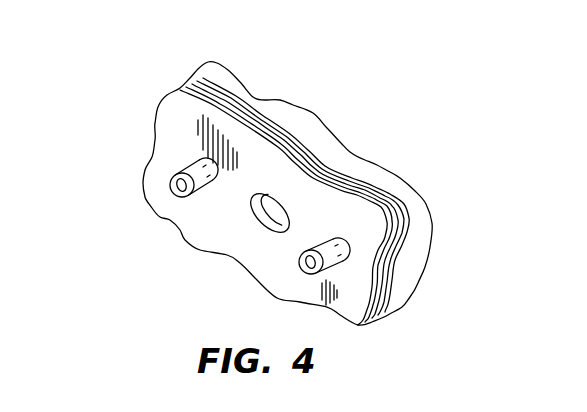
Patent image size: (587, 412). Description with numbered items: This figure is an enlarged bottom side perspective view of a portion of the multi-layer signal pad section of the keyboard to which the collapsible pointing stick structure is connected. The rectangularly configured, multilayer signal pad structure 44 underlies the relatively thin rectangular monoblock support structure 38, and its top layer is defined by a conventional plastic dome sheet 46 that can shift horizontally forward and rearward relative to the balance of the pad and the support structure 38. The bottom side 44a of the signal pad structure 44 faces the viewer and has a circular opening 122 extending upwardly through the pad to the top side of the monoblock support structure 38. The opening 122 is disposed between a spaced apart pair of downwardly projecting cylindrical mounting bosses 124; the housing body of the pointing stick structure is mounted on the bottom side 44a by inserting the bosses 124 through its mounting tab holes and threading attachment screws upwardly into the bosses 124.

The monoblock support structure 38 is at (253, 98).
The signal pad structure 44 is at (260, 178).
The bottom side of the signal pad structure 44a is at (238, 249).
The plastic dome sheet 46 is at (200, 74).
The circular opening 122 is at (273, 205).
The cylindrical mounting bosses 124 is at (342, 271).